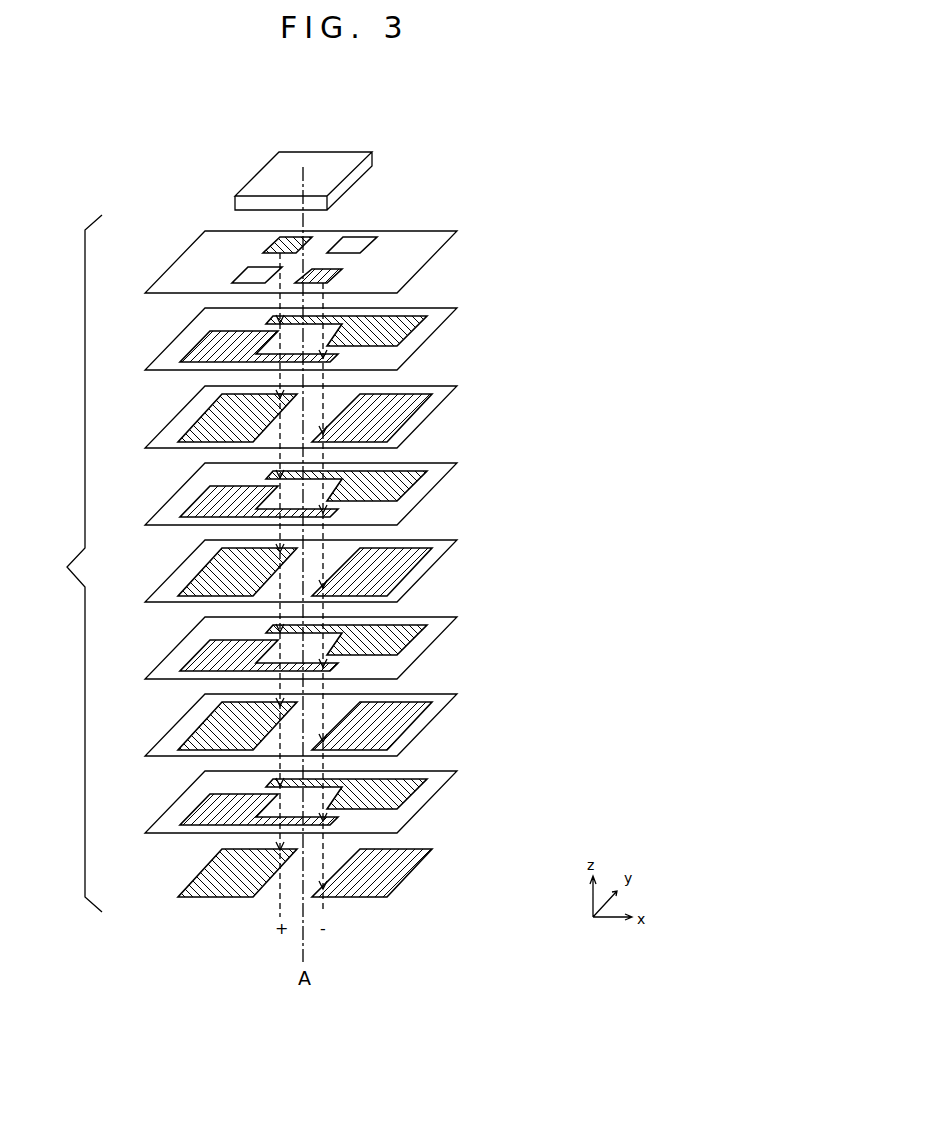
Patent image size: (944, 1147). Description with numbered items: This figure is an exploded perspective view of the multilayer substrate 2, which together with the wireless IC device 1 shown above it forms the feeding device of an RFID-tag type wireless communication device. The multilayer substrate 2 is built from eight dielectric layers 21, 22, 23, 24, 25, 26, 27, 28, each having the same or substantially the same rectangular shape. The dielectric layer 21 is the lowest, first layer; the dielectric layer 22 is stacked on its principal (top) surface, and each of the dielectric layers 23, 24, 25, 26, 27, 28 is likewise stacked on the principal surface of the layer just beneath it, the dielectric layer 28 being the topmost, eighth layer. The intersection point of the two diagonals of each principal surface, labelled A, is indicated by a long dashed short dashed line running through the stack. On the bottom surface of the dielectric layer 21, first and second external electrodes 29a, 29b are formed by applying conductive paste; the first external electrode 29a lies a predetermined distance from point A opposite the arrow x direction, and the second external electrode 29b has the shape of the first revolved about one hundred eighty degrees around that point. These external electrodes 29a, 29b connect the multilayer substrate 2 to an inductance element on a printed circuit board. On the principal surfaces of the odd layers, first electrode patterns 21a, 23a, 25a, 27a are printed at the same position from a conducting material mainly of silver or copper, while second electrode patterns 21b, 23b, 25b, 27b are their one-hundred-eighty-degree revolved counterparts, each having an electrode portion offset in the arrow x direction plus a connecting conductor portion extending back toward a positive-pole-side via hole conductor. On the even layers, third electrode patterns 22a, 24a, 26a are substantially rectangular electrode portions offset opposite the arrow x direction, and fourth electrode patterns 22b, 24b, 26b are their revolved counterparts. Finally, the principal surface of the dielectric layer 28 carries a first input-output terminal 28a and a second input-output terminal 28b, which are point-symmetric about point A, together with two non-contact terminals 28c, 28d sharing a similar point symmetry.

The wireless IC device 1 is at (293, 160).
The multilayer substrate 2 is at (74, 563).
The dielectric layer 21 is at (428, 801).
The first electrode pattern 21a is at (222, 808).
The second electrode pattern 21b is at (410, 786).
The dielectric layer 22 is at (428, 726).
The third electrode pattern 22a is at (228, 720).
The fourth electrode pattern 22b is at (405, 720).
The dielectric layer 23 is at (428, 649).
The first electrode pattern 23a is at (222, 654).
The second electrode pattern 23b is at (410, 632).
The dielectric layer 24 is at (428, 573).
The third electrode pattern 24a is at (235, 578).
The fourth electrode pattern 24b is at (405, 570).
The dielectric layer 25 is at (428, 496).
The first electrode pattern 25a is at (225, 501).
The second electrode pattern 25b is at (405, 485).
The dielectric layer 26 is at (428, 421).
The third electrode pattern 26a is at (235, 425).
The fourth electrode pattern 26b is at (405, 415).
The dielectric layer 27 is at (428, 343).
The first electrode pattern 27a is at (225, 347).
The second electrode pattern 27b is at (410, 327).
The dielectric layer 28 is at (425, 254).
The first input-output terminal 28a is at (275, 238).
The second input-output terminal 28b is at (340, 278).
The non-contact (NC) terminal 28c is at (250, 272).
The non-contact (NC) terminal 28d is at (350, 240).
The first external electrode 29a is at (210, 876).
The second external electrode 29b is at (398, 876).